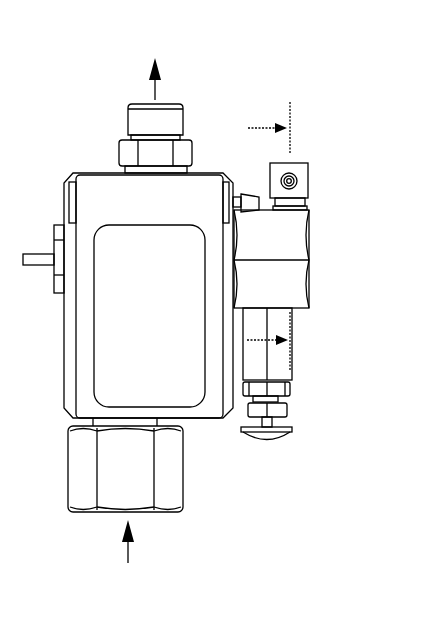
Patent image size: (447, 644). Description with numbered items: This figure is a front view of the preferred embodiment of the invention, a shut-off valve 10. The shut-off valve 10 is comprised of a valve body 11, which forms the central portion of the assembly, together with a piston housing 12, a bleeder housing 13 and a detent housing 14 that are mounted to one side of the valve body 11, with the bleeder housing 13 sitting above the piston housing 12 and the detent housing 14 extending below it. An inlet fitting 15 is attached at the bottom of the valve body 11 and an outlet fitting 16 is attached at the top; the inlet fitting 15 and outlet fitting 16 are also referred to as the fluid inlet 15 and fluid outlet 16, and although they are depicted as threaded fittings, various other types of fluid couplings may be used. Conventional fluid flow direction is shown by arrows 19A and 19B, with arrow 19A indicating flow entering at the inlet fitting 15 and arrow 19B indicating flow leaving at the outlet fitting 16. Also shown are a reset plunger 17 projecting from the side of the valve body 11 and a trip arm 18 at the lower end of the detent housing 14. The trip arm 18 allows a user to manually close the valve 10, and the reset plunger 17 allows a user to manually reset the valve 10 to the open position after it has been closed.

The shut-off valve 10 is at (266, 60).
The valve body 11 is at (63, 353).
The piston housing 12 is at (310, 240).
The bleeder housing 13 is at (308, 181).
The detent housing 14 is at (292, 375).
The inlet fitting 15 is at (180, 461).
The outlet fitting 16 is at (185, 140).
The reset plunger 17 is at (35, 253).
The trip arm 18 is at (285, 435).
The fluid flow direction arrow 19A is at (128, 548).
The fluid flow direction arrow 19B is at (155, 86).